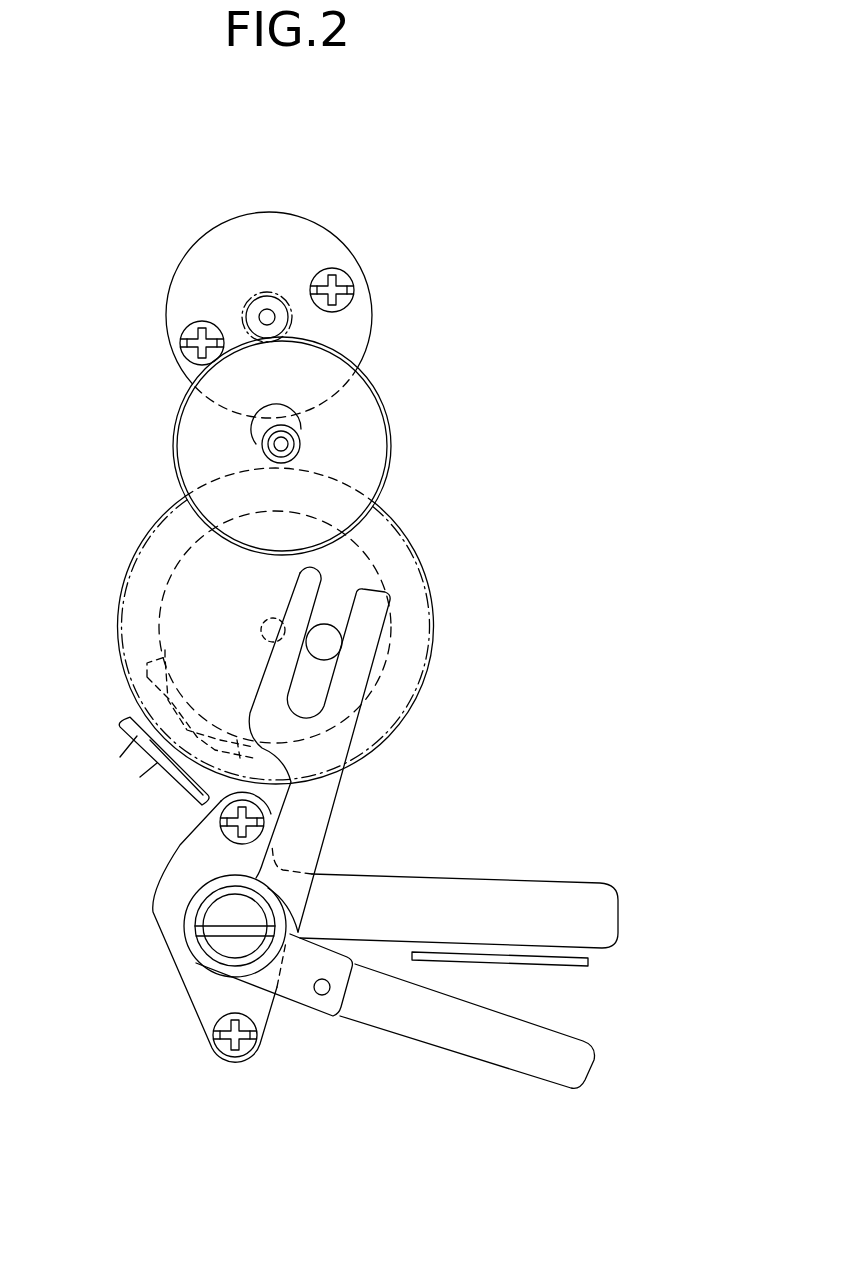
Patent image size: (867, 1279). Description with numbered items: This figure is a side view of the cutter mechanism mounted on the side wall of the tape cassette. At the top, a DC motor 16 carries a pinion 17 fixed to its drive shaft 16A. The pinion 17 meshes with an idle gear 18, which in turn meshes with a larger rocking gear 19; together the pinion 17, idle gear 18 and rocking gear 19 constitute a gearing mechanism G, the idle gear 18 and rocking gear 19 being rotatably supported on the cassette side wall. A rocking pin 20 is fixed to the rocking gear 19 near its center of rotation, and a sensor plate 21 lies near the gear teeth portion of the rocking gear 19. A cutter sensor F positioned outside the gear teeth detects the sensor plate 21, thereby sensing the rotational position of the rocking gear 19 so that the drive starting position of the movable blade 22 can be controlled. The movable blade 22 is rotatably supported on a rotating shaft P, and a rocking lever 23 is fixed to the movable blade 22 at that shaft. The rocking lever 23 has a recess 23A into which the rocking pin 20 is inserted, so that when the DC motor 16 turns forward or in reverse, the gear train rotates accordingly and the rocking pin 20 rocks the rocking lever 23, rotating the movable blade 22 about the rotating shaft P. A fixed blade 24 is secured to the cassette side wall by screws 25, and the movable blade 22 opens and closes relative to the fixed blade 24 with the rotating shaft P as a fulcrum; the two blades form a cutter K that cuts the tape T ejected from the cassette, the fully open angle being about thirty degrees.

The DC motor 16 is at (318, 247).
The drive shaft 16A is at (275, 318).
The pinion 17 is at (256, 312).
The idle gear 18 is at (350, 423).
The rocking gear 19 is at (397, 570).
The rocking pin 20 is at (328, 627).
The sensor plate 21 is at (150, 677).
The movable blade 22 is at (447, 1040).
The rocking lever 23 is at (360, 650).
The recess 23A is at (313, 696).
The fixed blade 24 is at (530, 902).
The screws 25 is at (253, 836).
The rotating shaft P is at (220, 947).
The tape T is at (570, 964).
The cutter sensor F is at (120, 757).
The gearing mechanism G is at (124, 518).
The cutter K is at (610, 1019).